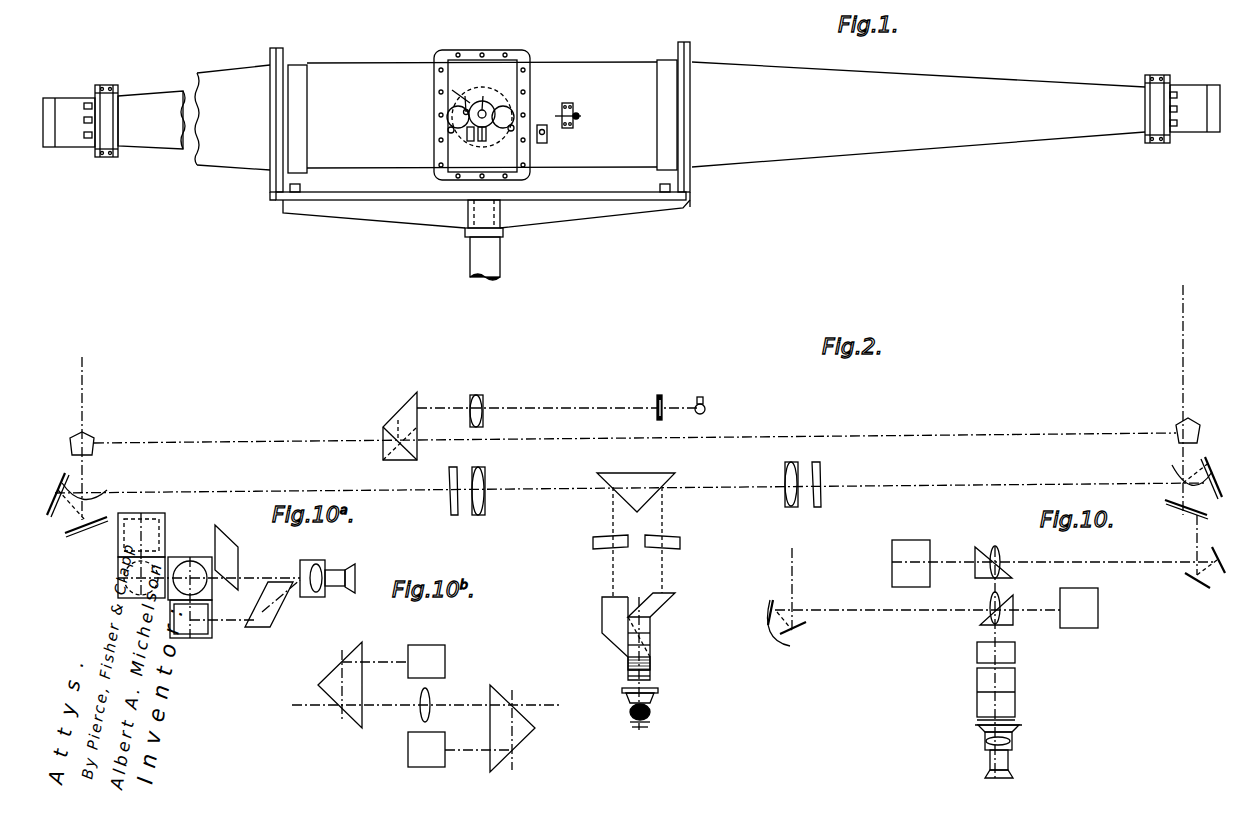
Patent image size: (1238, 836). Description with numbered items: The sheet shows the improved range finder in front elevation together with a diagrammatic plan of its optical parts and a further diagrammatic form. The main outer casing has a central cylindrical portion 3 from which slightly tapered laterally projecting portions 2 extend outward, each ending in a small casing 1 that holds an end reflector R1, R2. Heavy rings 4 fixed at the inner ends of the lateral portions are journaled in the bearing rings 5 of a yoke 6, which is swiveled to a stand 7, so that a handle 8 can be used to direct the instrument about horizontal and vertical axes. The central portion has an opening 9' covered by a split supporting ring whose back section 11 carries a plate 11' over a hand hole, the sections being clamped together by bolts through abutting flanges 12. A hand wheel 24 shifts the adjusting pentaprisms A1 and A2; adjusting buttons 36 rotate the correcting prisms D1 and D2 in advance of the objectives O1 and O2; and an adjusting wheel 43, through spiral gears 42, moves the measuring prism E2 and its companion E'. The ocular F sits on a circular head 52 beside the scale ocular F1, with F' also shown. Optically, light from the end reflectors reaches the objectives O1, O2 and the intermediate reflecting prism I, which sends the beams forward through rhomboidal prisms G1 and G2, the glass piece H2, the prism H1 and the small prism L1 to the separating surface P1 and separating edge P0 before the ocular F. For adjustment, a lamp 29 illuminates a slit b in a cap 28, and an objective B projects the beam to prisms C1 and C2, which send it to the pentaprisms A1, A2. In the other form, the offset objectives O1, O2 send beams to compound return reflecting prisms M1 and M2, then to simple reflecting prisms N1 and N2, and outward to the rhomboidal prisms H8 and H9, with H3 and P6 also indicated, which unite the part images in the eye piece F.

In FIG. 1, the end casing 1 is at (69, 104).
In FIG. 1, the laterally projecting portion 2 is at (192, 82).
In FIG. 1, the central cylindrical portion 3 is at (591, 72).
In FIG. 1, the heavy ring 4 is at (292, 66).
In FIG. 1, the bearing ring 5 is at (277, 48).
In FIG. 1, the yoke 6 is at (544, 208).
In FIG. 1, the stand 7 is at (478, 253).
In FIG. 1, the handle 8 is at (576, 112).
In FIG. 1, the opening 9' is at (502, 109).
In FIG. 1, the back section 11 is at (437, 91).
In FIG. 1, the plate 11' is at (481, 108).
In FIG. 1, the abutting flange 12 is at (491, 52).
In FIG. 1, the hand wheel 24 is at (549, 136).
In FIG. 1, the adjusting button 36 is at (448, 131).
In FIG. 1, the spiral gears 42 is at (497, 146).
In FIG. 1, the adjusting wheel 43 is at (467, 147).
In FIG. 1, the circular head 52 is at (485, 112).
In FIG. 1, the ocular F1 is at (465, 93).
In FIG. 1, the finder F' is at (489, 89).
In FIG. 2, the pentaprism A1 is at (1176, 425).
In FIG. 2, the pentaprism A2 is at (94, 439).
In FIG. 2, the end reflector R1 is at (1182, 474).
In FIG. 10, the end reflector R1 is at (1215, 586).
In FIG. 2, the end reflector R2 is at (86, 494).
In FIG. 10, the end reflector R2 is at (787, 632).
In FIG. 2, the prism C1 is at (416, 402).
In FIG. 2, the rhomboidal prism C2 is at (384, 451).
In FIG. 2, the objective B is at (484, 405).
In FIG. 2, the cap 28 is at (659, 395).
In FIG. 2, the slit b is at (666, 408).
In FIG. 2, the electric lamp 29 is at (707, 407).
In FIG. 2, the prism D1 is at (821, 495).
In FIG. 2, the prism D2 is at (451, 516).
In FIG. 2, the telescope objective O1 is at (790, 508).
In FIG. 10A, the telescope objective O1 is at (160, 570).
In FIG. 10, the telescope objective O1 is at (996, 550).
In FIG. 2, the telescope objective O2 is at (480, 516).
In FIG. 10A, the telescope objective O2 is at (205, 590).
In FIG. 10B, the telescope objective O2 is at (420, 713).
In FIG. 10, the telescope objective O2 is at (1000, 609).
In FIG. 2, the intermediate reflecting prism I is at (641, 471).
In FIG. 2, the measuring prism E2 is at (598, 536).
In FIG. 2, the reflector E' is at (680, 528).
In FIG. 2, the prism H1 is at (651, 645).
In FIG. 2, the rectangular glass piece H2 is at (602, 620).
In FIG. 10, the prism H3 is at (977, 655).
In FIG. 10A, the rhomboidal prism H8 is at (238, 541).
In FIG. 10A, the rhomboidal prism H9 is at (285, 602).
In FIG. 10, the rhomboidal prism H9 is at (977, 688).
In FIG. 2, the rhomboidal prism G1 is at (676, 609).
In FIG. 2, the rhomboidal prism G2 is at (620, 650).
In FIG. 2, the rhomboidal prism L1 is at (651, 630).
In FIG. 2, the separating edge P0 is at (628, 676).
In FIG. 10A, the separating edge P0 is at (293, 584).
In FIG. 10, the separating edge P0 is at (977, 719).
In FIG. 2, the separating surface P1 is at (652, 662).
In FIG. 10A, the plate P6 is at (288, 586).
In FIG. 2, the ocular F is at (659, 707).
In FIG. 10A, the ocular F is at (327, 565).
In FIG. 10, the ocular F is at (1010, 751).
In FIG. 10A, the compound return reflecting prism M1 is at (149, 513).
In FIG. 10B, the compound return reflecting prism M1 is at (342, 662).
In FIG. 10, the compound return reflecting prism M1 is at (898, 546).
In FIG. 10A, the compound return reflecting prism M2 is at (185, 638).
In FIG. 10B, the compound return reflecting prism M2 is at (525, 738).
In FIG. 10, the compound return reflecting prism M2 is at (1097, 606).
In FIG. 10A, the simple reflecting prism N1 is at (176, 556).
In FIG. 10B, the simple reflecting prism N1 is at (446, 655).
In FIG. 10, the simple reflecting prism N1 is at (974, 554).
In FIG. 10A, the simple reflecting prism N2 is at (195, 636).
In FIG. 10B, the simple reflecting prism N2 is at (408, 752).
In FIG. 10, the simple reflecting prism N2 is at (1014, 626).